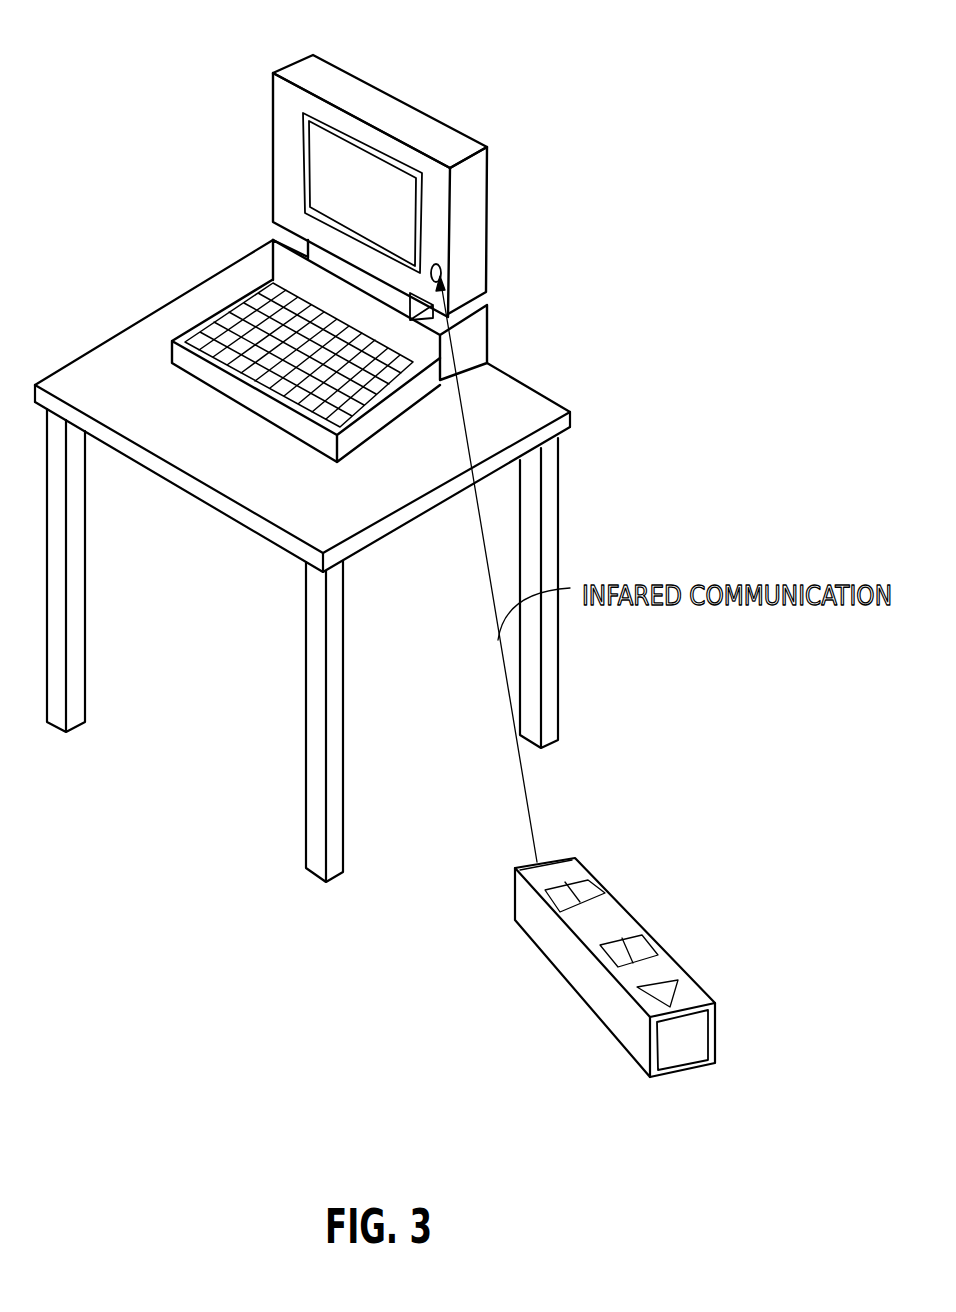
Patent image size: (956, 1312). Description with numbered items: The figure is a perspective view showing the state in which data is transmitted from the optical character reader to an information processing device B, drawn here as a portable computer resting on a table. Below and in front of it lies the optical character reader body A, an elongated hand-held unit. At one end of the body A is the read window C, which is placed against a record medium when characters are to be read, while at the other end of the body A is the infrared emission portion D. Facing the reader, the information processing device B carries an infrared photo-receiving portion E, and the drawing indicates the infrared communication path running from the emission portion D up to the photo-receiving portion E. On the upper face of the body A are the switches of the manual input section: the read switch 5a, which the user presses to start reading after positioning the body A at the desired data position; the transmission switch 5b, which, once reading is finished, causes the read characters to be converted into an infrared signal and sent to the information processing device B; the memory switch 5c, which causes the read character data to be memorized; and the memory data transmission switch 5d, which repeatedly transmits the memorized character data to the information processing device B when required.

The optical character reader body A is at (618, 1017).
The information processing device B is at (385, 98).
The read window C is at (688, 1043).
The infrared emission portion D is at (545, 877).
The infrared photo-receiving portion E is at (447, 262).
The read switch 5a is at (633, 943).
The transmission switch 5b is at (583, 895).
The memory switch 5c is at (600, 952).
The memory data transmission switch 5d is at (520, 890).